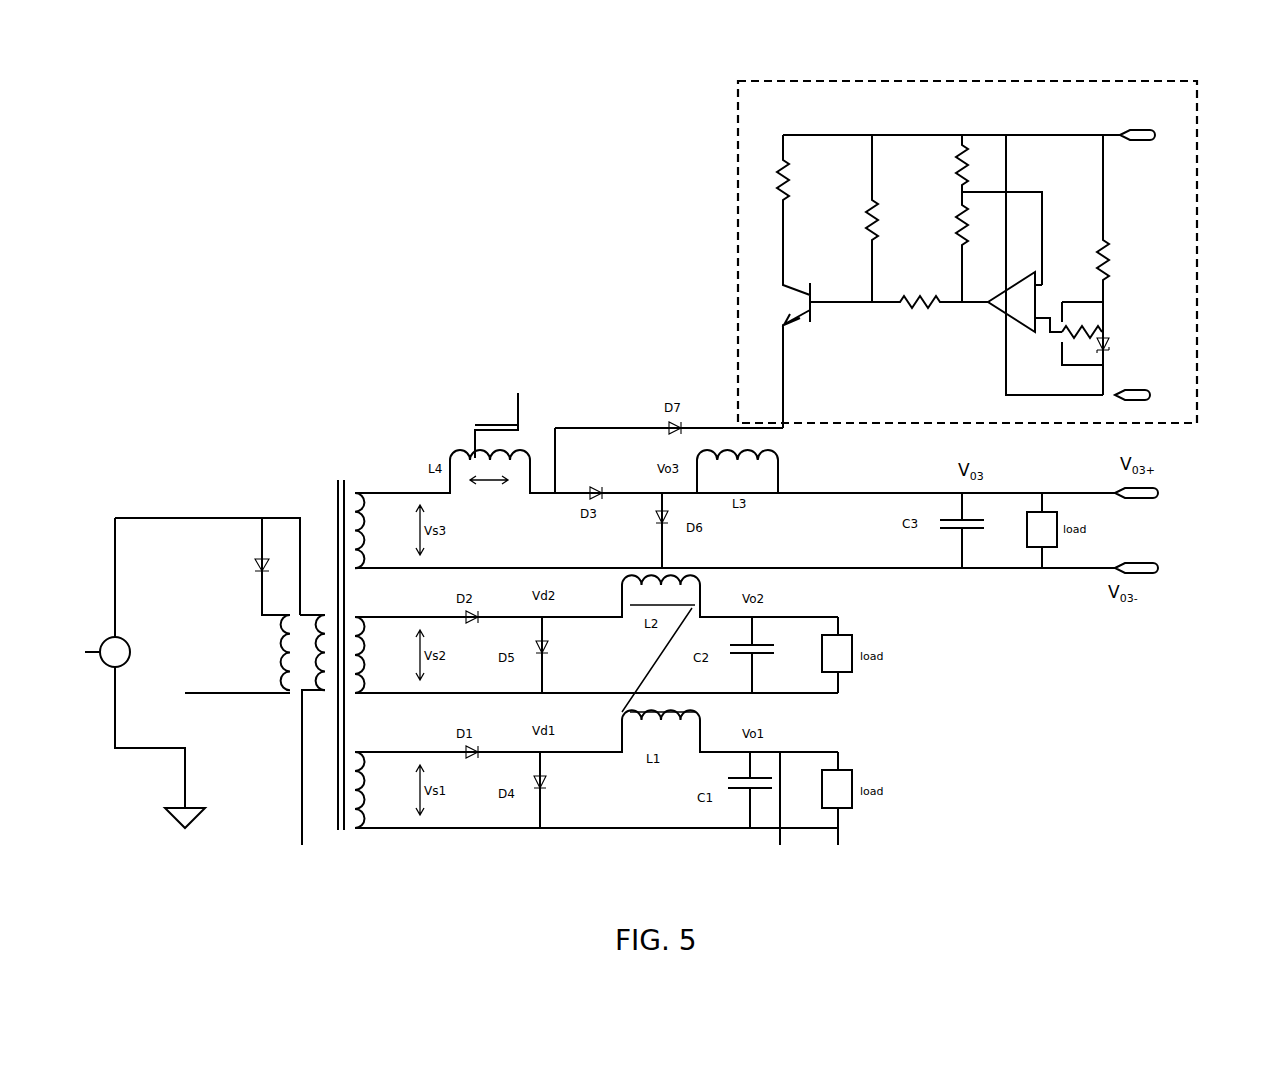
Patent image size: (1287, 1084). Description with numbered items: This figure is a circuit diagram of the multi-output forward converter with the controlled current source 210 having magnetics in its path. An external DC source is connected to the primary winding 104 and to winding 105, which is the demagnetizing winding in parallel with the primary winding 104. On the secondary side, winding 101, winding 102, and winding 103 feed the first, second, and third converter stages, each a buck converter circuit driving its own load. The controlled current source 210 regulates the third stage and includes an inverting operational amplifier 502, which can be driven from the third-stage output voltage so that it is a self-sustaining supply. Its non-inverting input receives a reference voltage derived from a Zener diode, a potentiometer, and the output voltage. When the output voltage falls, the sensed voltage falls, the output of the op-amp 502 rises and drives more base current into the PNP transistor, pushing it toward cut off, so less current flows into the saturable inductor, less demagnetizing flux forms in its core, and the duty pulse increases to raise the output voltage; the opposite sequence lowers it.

The winding 101 is at (352, 778).
The winding 102 is at (355, 633).
The winding 103 is at (355, 503).
The primary winding 104 is at (290, 680).
The winding 105 is at (283, 655).
The controlled current source 210 is at (997, 230).
The inverting operational amplifier 502 is at (992, 305).